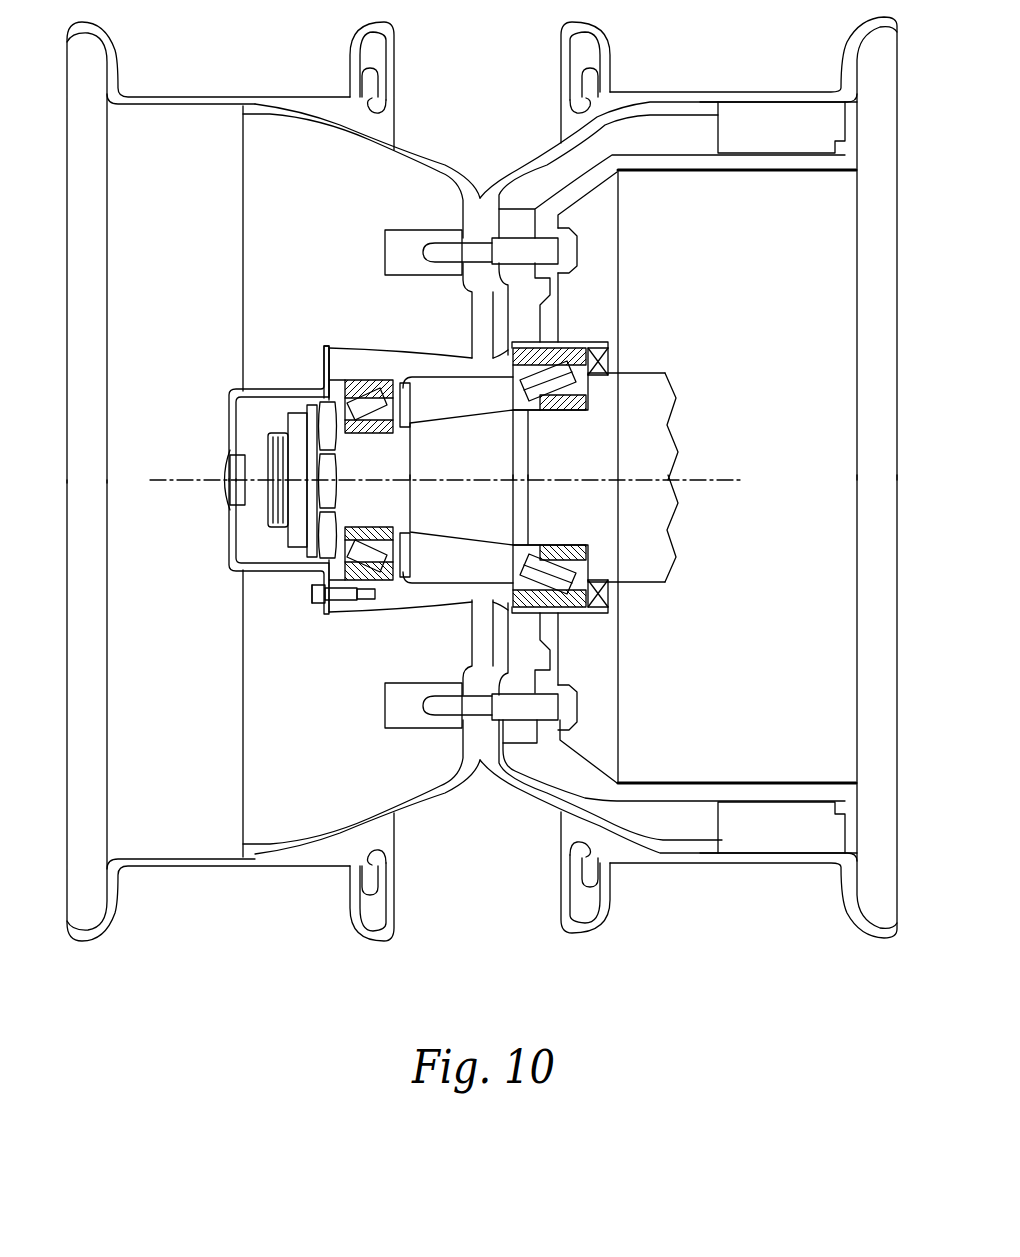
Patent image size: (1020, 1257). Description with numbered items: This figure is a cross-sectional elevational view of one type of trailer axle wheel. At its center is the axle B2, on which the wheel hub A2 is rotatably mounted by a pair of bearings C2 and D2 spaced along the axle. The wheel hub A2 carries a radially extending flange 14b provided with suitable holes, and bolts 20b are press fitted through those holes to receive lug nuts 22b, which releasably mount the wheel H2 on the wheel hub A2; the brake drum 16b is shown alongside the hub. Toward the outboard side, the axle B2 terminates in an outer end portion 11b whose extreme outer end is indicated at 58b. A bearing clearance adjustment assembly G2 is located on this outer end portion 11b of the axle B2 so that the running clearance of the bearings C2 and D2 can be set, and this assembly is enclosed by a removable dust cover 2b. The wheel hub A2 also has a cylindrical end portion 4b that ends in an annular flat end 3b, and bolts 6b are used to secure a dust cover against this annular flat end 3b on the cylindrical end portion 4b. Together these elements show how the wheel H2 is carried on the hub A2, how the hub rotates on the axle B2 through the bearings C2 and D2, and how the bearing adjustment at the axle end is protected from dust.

The wheel H2 is at (645, 82).
The brake drum 16b is at (727, 157).
The flange 14b is at (532, 634).
The bolts 20b is at (550, 250).
The lug nuts 22b is at (405, 243).
The bearing C2 is at (543, 338).
The axle B2 is at (450, 556).
The wheel hub A2 is at (418, 343).
The bearing D2 is at (372, 366).
The removable dust cover 2b is at (230, 392).
The annular flat end 3b is at (325, 362).
The bearing clearance adjustment assembly G2 is at (287, 402).
The outer end of axle 58b is at (268, 438).
The outer end portion of axle 11b is at (280, 512).
The bolts 6b is at (312, 596).
The cylindrical end portion 4b is at (355, 608).